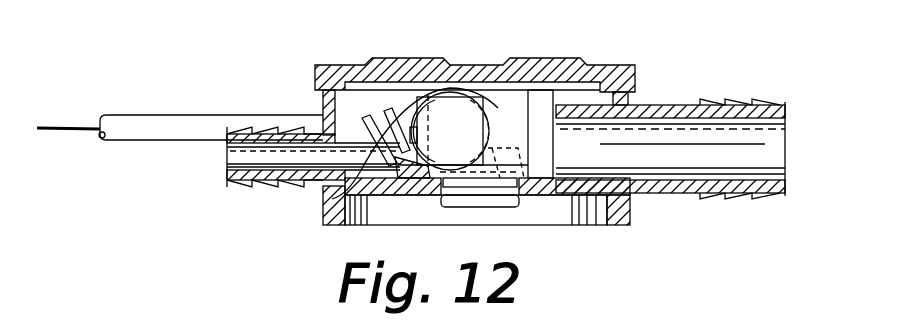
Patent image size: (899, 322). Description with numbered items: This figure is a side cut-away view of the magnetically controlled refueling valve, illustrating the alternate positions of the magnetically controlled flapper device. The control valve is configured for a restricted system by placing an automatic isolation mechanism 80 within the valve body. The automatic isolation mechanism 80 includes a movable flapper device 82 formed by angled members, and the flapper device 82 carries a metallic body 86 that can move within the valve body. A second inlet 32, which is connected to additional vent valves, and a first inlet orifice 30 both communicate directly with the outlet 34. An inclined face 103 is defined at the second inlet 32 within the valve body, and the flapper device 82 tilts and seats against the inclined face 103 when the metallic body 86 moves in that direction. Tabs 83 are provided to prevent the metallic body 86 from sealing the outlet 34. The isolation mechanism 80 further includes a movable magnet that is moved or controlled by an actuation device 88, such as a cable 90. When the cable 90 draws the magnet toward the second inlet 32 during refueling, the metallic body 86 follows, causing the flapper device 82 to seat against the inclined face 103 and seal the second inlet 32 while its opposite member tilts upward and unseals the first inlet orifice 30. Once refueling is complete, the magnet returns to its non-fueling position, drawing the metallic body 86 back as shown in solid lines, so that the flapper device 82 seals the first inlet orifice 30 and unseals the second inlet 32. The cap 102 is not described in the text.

The automatic isolation mechanism 80 is at (566, 36).
The flapper device 82 is at (505, 206).
The tabs 83 is at (527, 97).
The metallic body 86 is at (402, 110).
The actuation device 88 is at (167, 86).
The cable 90 is at (140, 134).
The second inlet 32 is at (228, 153).
The outlet 34 is at (786, 138).
The housing cap 102 is at (480, 65).
The inclined face 103 is at (332, 199).
The first inlet orifice 30 is at (481, 190).